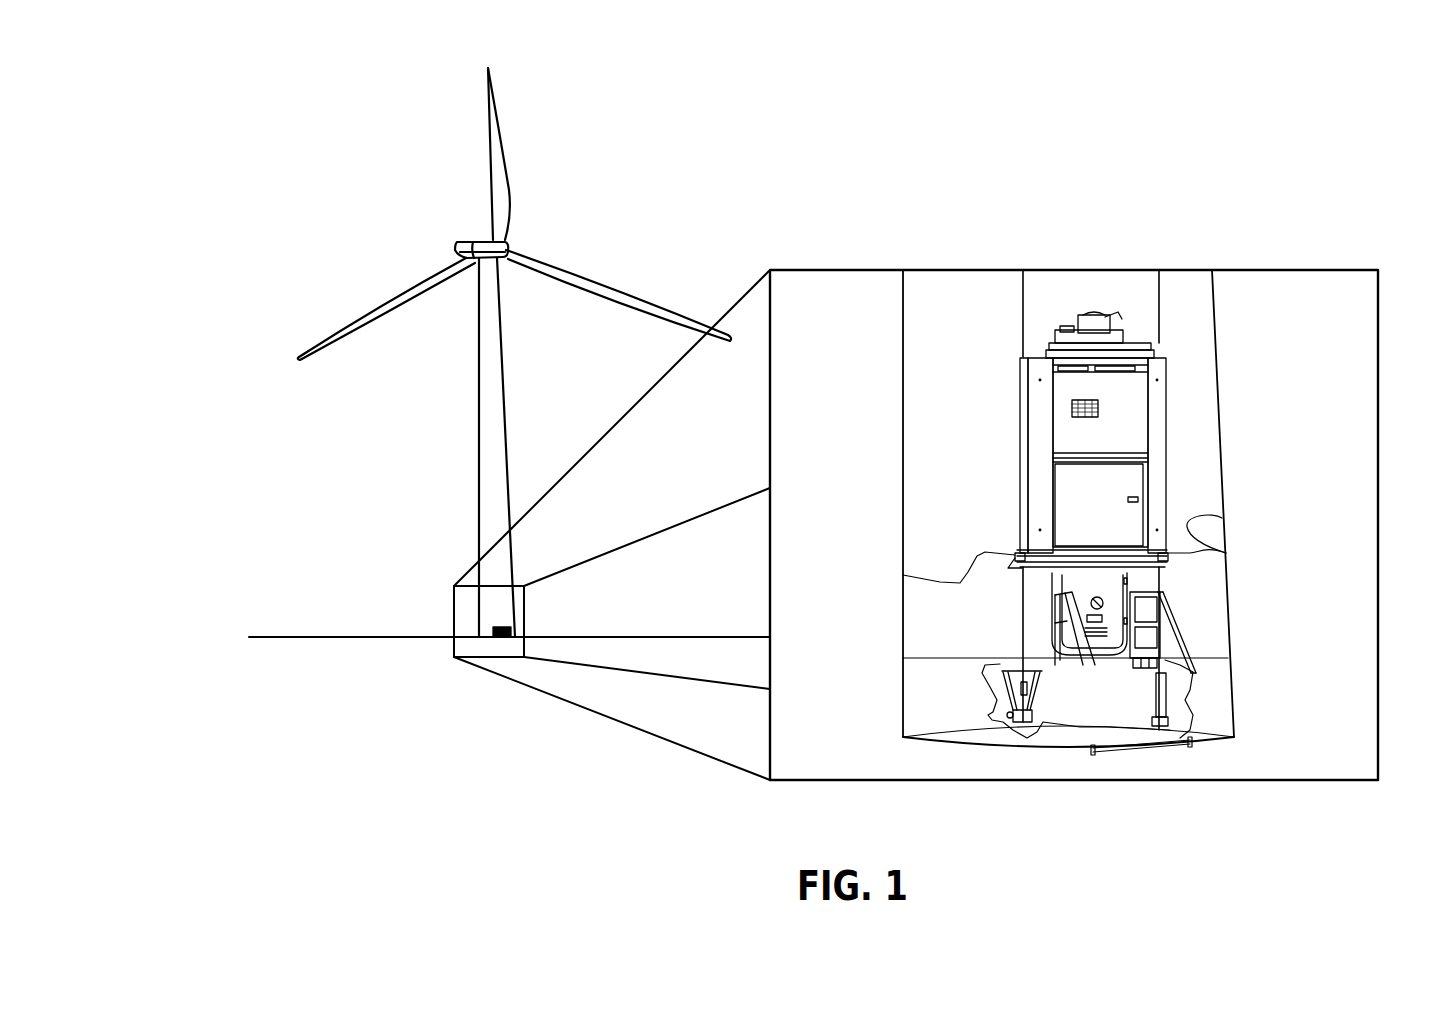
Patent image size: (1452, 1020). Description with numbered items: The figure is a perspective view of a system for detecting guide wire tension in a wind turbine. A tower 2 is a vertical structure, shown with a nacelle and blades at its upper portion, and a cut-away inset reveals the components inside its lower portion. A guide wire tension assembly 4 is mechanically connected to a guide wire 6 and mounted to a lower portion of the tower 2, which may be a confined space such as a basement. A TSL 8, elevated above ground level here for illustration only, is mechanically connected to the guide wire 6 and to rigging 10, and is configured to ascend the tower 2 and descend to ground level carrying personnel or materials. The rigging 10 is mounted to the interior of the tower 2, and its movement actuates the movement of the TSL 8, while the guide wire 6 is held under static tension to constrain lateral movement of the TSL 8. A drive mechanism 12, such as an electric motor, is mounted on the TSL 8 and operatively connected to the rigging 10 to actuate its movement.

The tower 2 is at (494, 454).
The guide wire tension assembly 4 is at (1176, 673).
The guide wire 6 is at (1020, 605).
The TSL 8 is at (1068, 500).
The rigging 10 is at (1027, 312).
The drive mechanism 12 is at (1112, 335).